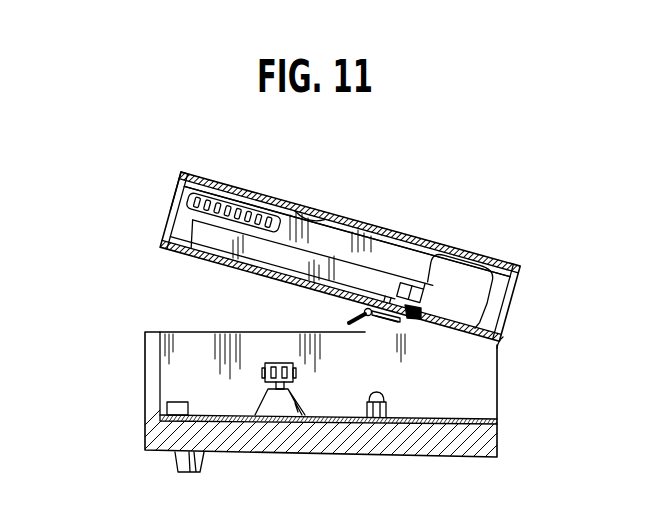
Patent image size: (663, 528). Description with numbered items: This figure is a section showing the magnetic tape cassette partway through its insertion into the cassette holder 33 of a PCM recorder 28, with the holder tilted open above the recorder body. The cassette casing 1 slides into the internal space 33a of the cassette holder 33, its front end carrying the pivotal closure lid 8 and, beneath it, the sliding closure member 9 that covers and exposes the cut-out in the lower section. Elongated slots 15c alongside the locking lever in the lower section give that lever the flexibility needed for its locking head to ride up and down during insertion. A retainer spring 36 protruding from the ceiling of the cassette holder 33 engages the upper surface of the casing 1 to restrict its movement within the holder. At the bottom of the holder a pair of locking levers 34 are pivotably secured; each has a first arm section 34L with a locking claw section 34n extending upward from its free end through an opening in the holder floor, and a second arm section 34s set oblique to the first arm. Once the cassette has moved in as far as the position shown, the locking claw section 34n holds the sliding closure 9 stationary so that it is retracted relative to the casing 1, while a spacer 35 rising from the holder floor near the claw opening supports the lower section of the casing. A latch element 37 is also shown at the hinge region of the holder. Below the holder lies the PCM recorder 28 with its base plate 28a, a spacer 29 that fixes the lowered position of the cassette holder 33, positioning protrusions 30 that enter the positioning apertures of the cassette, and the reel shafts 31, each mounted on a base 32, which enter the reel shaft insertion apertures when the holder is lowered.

The casing 1 is at (438, 248).
The pivotal closure lid 8 is at (481, 277).
The sliding closure member 9 is at (223, 254).
The elongated slots 15c is at (381, 305).
The PCM recorder 28 is at (145, 388).
The base plate 28a is at (498, 421).
The spacer 29 is at (185, 404).
The positioning protrusions 30 is at (370, 398).
The reel shafts 31 is at (281, 362).
The base of the reel shaft 32 is at (298, 410).
The cassette holder 33 is at (283, 200).
The internal space 33a is at (180, 177).
The locking levers 34 is at (415, 355).
The second arm section 34s is at (368, 318).
The first arm section 34L is at (385, 320).
The locking claw section 34n is at (447, 337).
The spacer 35 is at (498, 343).
The retainer spring 36 is at (336, 212).
The latch 37 is at (399, 305).